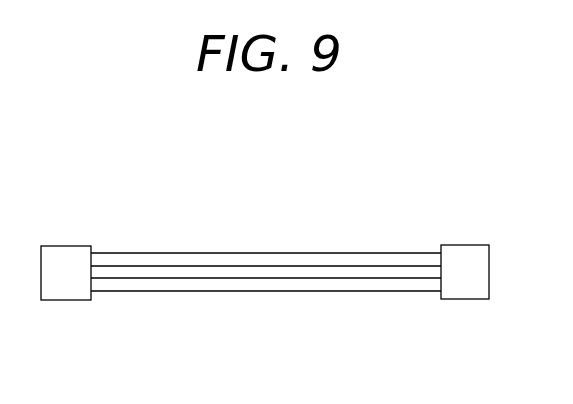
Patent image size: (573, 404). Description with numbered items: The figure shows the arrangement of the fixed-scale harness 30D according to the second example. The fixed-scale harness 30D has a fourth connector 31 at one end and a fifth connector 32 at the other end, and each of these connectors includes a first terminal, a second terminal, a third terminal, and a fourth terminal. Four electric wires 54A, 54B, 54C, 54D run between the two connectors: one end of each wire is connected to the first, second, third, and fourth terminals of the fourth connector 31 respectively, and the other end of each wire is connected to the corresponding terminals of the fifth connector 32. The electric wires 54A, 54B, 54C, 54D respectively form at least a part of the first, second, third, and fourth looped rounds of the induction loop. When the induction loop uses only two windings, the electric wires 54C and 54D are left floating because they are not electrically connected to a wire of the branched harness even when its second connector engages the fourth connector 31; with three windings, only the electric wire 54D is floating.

The fixed-scale harness 30D is at (243, 152).
The fifth connector 32 is at (65, 246).
The fourth connector 31 is at (465, 245).
The electric wire 54A is at (160, 253).
The electric wire 54B is at (237, 266).
The electric wire 54C is at (320, 278).
The electric wire 54D is at (400, 291).